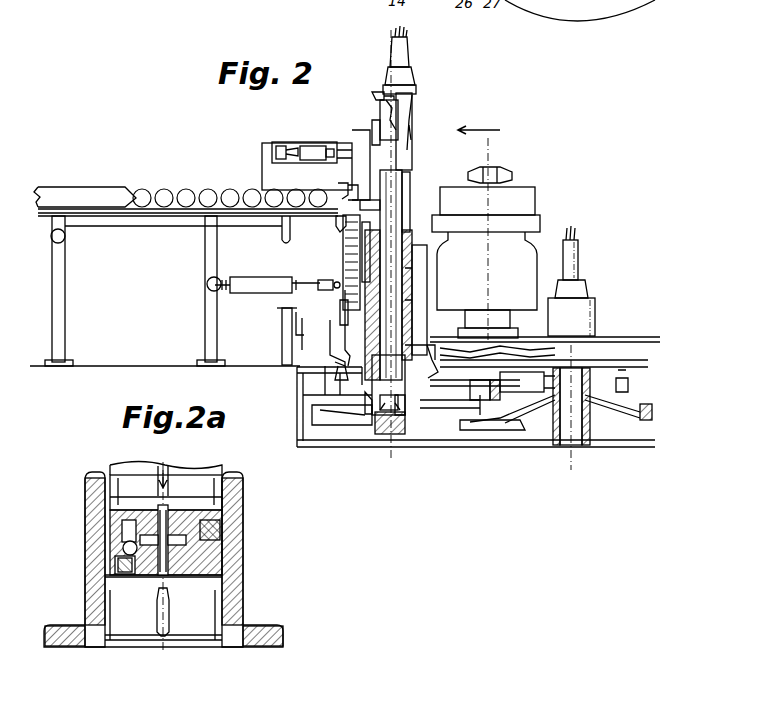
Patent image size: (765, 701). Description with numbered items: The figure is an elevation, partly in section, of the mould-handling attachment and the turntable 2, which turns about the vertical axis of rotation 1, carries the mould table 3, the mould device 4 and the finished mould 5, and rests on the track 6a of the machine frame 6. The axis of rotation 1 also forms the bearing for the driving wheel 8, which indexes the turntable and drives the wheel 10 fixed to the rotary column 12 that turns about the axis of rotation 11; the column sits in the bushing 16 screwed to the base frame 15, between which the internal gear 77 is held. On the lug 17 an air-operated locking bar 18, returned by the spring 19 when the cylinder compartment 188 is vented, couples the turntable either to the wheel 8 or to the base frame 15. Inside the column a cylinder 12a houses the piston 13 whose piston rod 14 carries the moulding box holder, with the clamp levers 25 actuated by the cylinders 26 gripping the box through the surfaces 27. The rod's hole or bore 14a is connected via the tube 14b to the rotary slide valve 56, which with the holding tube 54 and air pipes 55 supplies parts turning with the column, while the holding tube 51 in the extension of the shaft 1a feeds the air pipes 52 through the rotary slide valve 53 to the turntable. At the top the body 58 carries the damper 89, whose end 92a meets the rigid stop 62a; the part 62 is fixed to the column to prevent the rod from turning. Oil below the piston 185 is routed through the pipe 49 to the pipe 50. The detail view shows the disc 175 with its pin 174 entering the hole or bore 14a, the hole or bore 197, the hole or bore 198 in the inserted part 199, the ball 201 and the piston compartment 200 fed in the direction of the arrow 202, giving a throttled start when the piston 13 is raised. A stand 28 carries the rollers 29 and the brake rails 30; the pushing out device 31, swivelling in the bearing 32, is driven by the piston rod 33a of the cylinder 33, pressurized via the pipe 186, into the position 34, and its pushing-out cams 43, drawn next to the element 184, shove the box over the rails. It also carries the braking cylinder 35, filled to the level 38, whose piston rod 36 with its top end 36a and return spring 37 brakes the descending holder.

In FIG. 2, the vertical axis of rotation 1 is at (570, 448).
In FIG. 2, the shaft 1a is at (578, 370).
In FIG. 2, the turntable 2 is at (618, 336).
In FIG. 2, the mould table 3 is at (542, 216).
In FIG. 2, the mould device 4 is at (538, 186).
In FIG. 2, the finished mould 5 is at (262, 168).
In FIG. 2, the machine frame 6 is at (438, 440).
In FIG. 2, the track 6a is at (480, 436).
In FIG. 2, the driving wheel 8 is at (642, 404).
In FIG. 2, the wheel 10 is at (326, 428).
In FIG. 2, the axis of rotation 11 is at (402, 430).
In FIG. 2A, the axis of rotation 11 is at (210, 530).
In FIG. 2, the rotary column 12 is at (392, 432).
In FIG. 2, the cylinder 12a is at (382, 436).
In FIG. 2A, the cylinder 12a is at (262, 636).
In FIG. 2, the piston 13 is at (366, 410).
In FIG. 2A, the piston 13 is at (200, 558).
In FIG. 2, the piston rod 14 is at (405, 172).
In FIG. 2, the hole or bore 14a is at (400, 160).
In FIG. 2A, the hole or bore 14a is at (168, 550).
In FIG. 2, the tube 14b is at (413, 138).
In FIG. 2, the base frame 15 is at (352, 380).
In FIG. 2, the bushing 16 is at (360, 368).
In FIG. 2, the lug 17 is at (500, 356).
In FIG. 2, the locking bar 18 is at (500, 400).
In FIG. 2, the spring 19 is at (520, 400).
In FIG. 2, the clamp levers 25 is at (282, 146).
In FIG. 2, the cylinders 26 is at (312, 146).
In FIG. 2, the surfaces 27 is at (500, 168).
In FIG. 2, the stand 28 is at (205, 339).
In FIG. 2, the rollers 29 is at (164, 186).
In FIG. 2, the brake rails 30 is at (110, 186).
In FIG. 2, the pushing out device 31 is at (343, 306).
In FIG. 2, the bearing 32 is at (330, 420).
In FIG. 2, the cylinder 33 is at (258, 277).
In FIG. 2, the piston rod 33a is at (318, 280).
In FIG. 2, the position 34 is at (342, 335).
In FIG. 2, the braking cylinder 35 is at (345, 325).
In FIG. 2, the piston rod 36 is at (340, 310).
In FIG. 2, the top end 36a is at (370, 200).
In FIG. 2, the return spring 37 is at (335, 300).
In FIG. 2, the level 38 is at (368, 208).
In FIG. 2, the pushing-out cams 43 is at (348, 186).
In FIG. 2, the pipe 49 is at (410, 250).
In FIG. 2, the pipe 50 is at (384, 225).
In FIG. 2, the holding tube 51 is at (580, 268).
In FIG. 2, the air pipes 52 is at (578, 234).
In FIG. 2, the rotary slide valve 53 is at (590, 290).
In FIG. 2, the holding tube 54 is at (410, 54).
In FIG. 2, the air pipes 55 is at (406, 32).
In FIG. 2, the rotary slide valve 56 is at (414, 78).
In FIG. 2, the body 58 is at (412, 125).
In FIG. 2, the part 62 is at (418, 90).
In FIG. 2, the rigid stop 62a is at (380, 92).
In FIG. 2, the internal gear 77 is at (436, 345).
In FIG. 2, the damper 89 is at (384, 118).
In FIG. 2, the end 92a is at (390, 110).
In FIG. 2A, the pin 174 is at (154, 605).
In FIG. 2A, the disc 175 is at (128, 638).
In FIG. 2, the stop 184 is at (338, 186).
In FIG. 2, the piston 185 is at (372, 240).
In FIG. 2, the pipe 186 is at (296, 318).
In FIG. 2, the cylinder compartment 188 is at (482, 402).
In FIG. 2A, the hole or bore 197 is at (150, 535).
In FIG. 2A, the hole or bore 198 is at (124, 555).
In FIG. 2A, the inserted part 199 is at (112, 565).
In FIG. 2, the piston compartment 200 is at (378, 432).
In FIG. 2A, the piston compartment 200 is at (232, 600).
In FIG. 2A, the ball 201 is at (122, 534).
In FIG. 2A, the arrow 202 is at (166, 458).